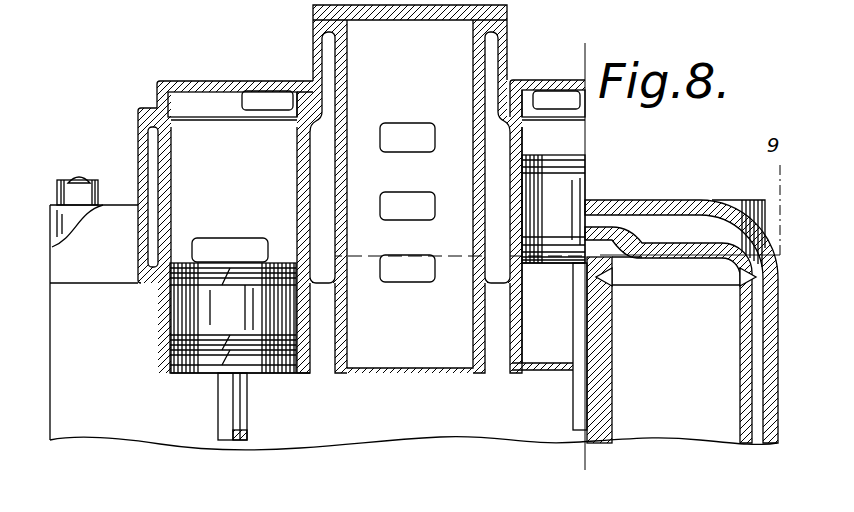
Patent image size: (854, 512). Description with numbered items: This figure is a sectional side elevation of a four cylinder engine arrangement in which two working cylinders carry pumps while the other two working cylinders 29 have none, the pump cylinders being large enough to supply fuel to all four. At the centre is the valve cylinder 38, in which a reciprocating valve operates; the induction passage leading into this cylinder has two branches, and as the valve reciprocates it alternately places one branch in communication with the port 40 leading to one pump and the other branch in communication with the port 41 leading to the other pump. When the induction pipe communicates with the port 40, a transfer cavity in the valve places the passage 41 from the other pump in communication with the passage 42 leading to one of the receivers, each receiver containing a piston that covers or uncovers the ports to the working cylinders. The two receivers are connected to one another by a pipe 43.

The working cylinder 29 is at (681, 321).
The valve cylinder 38 is at (453, 70).
The port 40 is at (409, 274).
The port 41 is at (420, 133).
The passage 42 is at (408, 207).
The pipe 43 is at (273, 100).